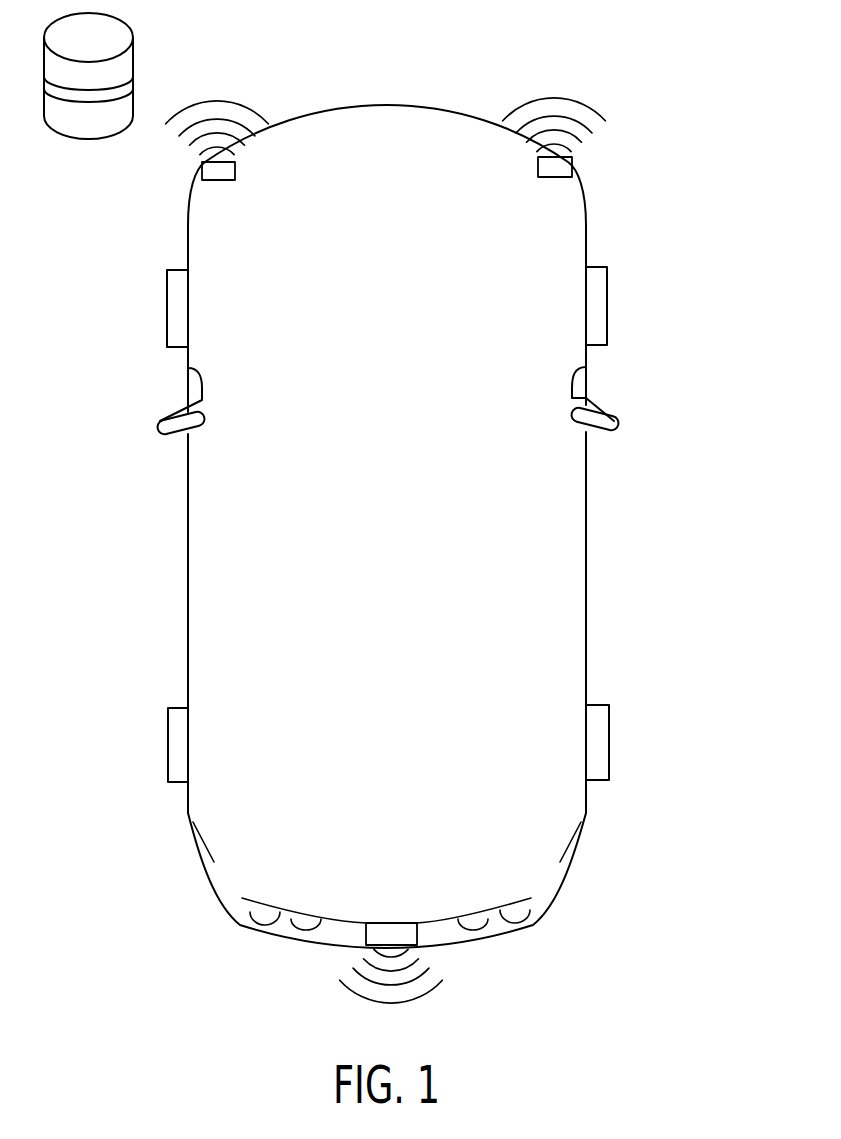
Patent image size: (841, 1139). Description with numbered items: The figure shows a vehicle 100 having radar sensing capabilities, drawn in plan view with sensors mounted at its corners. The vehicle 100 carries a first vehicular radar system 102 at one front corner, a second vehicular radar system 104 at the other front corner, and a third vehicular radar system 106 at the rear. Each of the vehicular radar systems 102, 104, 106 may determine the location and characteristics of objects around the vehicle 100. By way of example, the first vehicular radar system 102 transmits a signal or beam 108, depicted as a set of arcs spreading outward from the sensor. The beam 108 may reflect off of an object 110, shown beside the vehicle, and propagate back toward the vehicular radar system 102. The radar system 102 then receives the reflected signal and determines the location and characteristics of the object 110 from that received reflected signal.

The vehicle 100 is at (668, 206).
The first vehicular radar system 102 is at (236, 170).
The second vehicular radar system 104 is at (538, 166).
The third vehicular radar system 106 is at (393, 921).
The beam 108 is at (246, 107).
The object 110 is at (134, 58).